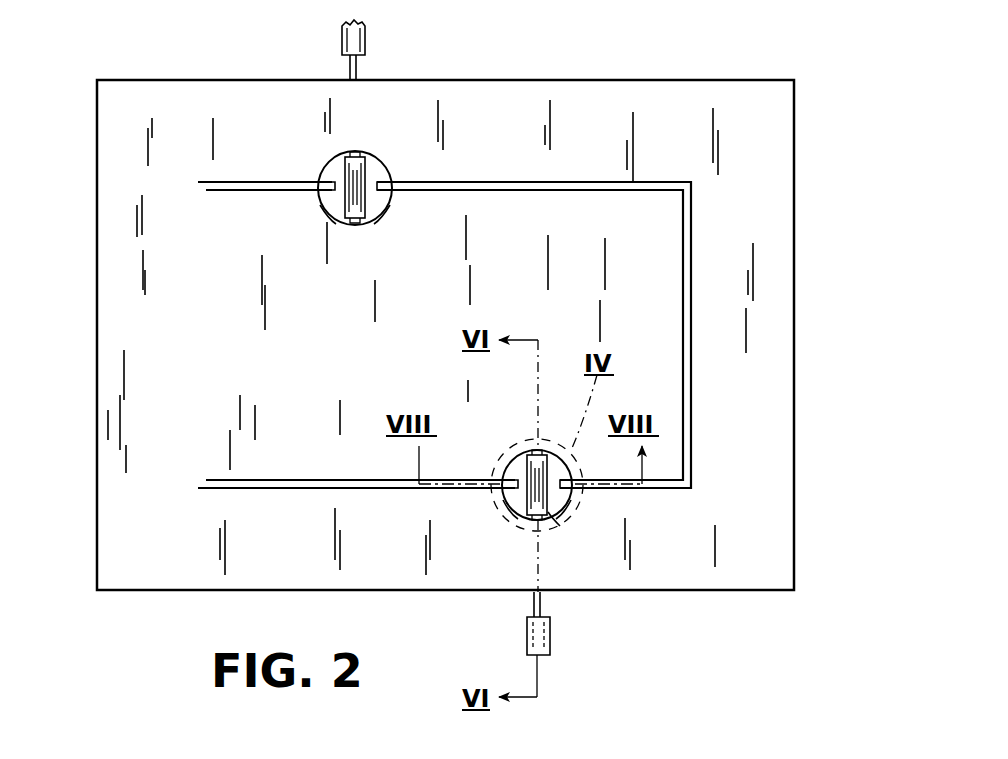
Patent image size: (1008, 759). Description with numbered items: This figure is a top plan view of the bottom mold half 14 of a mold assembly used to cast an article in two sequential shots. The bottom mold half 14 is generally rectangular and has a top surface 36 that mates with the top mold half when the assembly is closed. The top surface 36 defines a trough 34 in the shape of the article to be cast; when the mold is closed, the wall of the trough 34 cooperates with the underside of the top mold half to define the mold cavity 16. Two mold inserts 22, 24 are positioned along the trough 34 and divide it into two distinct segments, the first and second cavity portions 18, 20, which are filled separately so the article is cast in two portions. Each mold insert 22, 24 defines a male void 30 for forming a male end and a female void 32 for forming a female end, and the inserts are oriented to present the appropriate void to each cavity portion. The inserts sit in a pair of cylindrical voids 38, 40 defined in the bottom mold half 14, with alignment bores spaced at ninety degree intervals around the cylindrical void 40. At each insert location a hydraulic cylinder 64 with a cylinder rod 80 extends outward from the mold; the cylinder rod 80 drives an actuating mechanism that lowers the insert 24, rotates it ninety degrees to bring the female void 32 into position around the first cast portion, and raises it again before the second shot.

The bottom mold half 14 is at (797, 161).
The mold cavity 16 is at (617, 186).
The first portion of the mold cavity 18 is at (203, 284).
The second portion of the mold cavity 20 is at (688, 316).
The mold insert 22 is at (400, 61).
The mold insert 24 is at (512, 518).
The male void 30 is at (323, 209).
The female void 32 is at (346, 190).
The trough 34 is at (283, 480).
The top surface 36 is at (606, 138).
The cylindrical void 38 is at (335, 223).
The cylindrical void 40 is at (552, 526).
The hydraulic cylinder 64 is at (368, 38).
The cylinder rod 80 is at (350, 72).